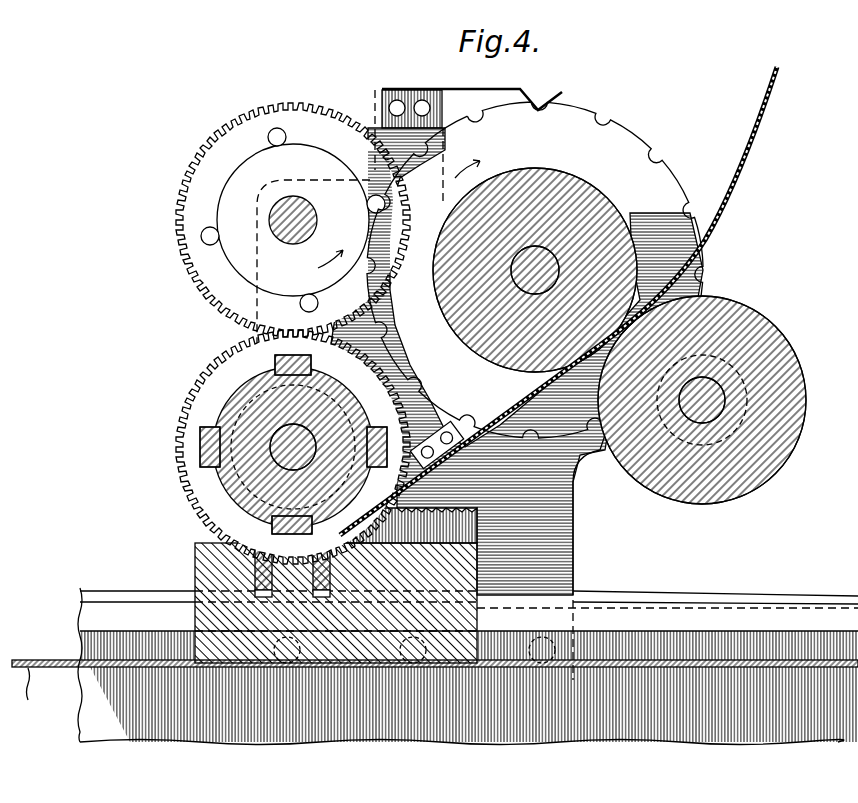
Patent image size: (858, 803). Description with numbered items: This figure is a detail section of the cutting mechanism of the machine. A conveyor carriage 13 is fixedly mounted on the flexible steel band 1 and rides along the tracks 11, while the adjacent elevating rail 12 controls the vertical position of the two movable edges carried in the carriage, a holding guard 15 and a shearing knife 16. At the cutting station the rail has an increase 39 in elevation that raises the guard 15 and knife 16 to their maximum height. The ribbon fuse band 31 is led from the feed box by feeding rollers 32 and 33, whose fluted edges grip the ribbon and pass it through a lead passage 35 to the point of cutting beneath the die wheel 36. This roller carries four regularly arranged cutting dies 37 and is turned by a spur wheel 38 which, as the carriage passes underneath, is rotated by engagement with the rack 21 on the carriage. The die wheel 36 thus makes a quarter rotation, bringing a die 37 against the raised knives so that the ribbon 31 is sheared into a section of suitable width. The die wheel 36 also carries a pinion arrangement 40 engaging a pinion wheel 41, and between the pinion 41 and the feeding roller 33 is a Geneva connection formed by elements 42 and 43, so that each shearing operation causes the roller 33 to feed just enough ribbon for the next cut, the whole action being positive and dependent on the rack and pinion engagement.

The flexible steel band 1 is at (38, 672).
The tracks 11 is at (93, 618).
The elevating rail 12 is at (590, 594).
The conveyor carriage 13 is at (195, 615).
The holding guard 15 is at (255, 550).
The shearing knife 16 is at (313, 565).
The rack 21 is at (272, 537).
The ribbon fuse band 31 is at (770, 113).
The feeding roller 32 is at (772, 350).
The feeding roller 33 is at (592, 200).
The lead passage 35 is at (503, 413).
The die wheel 36 is at (240, 468).
The cutting dies 37 is at (277, 358).
The spur wheel 38 is at (237, 411).
The increase in elevation of the rail 39 is at (478, 561).
The pinion arrangement 40 is at (215, 384).
The pinion wheel 41 is at (197, 199).
The Geneva connection element 42 is at (252, 168).
The Geneva connection element 43 is at (573, 122).